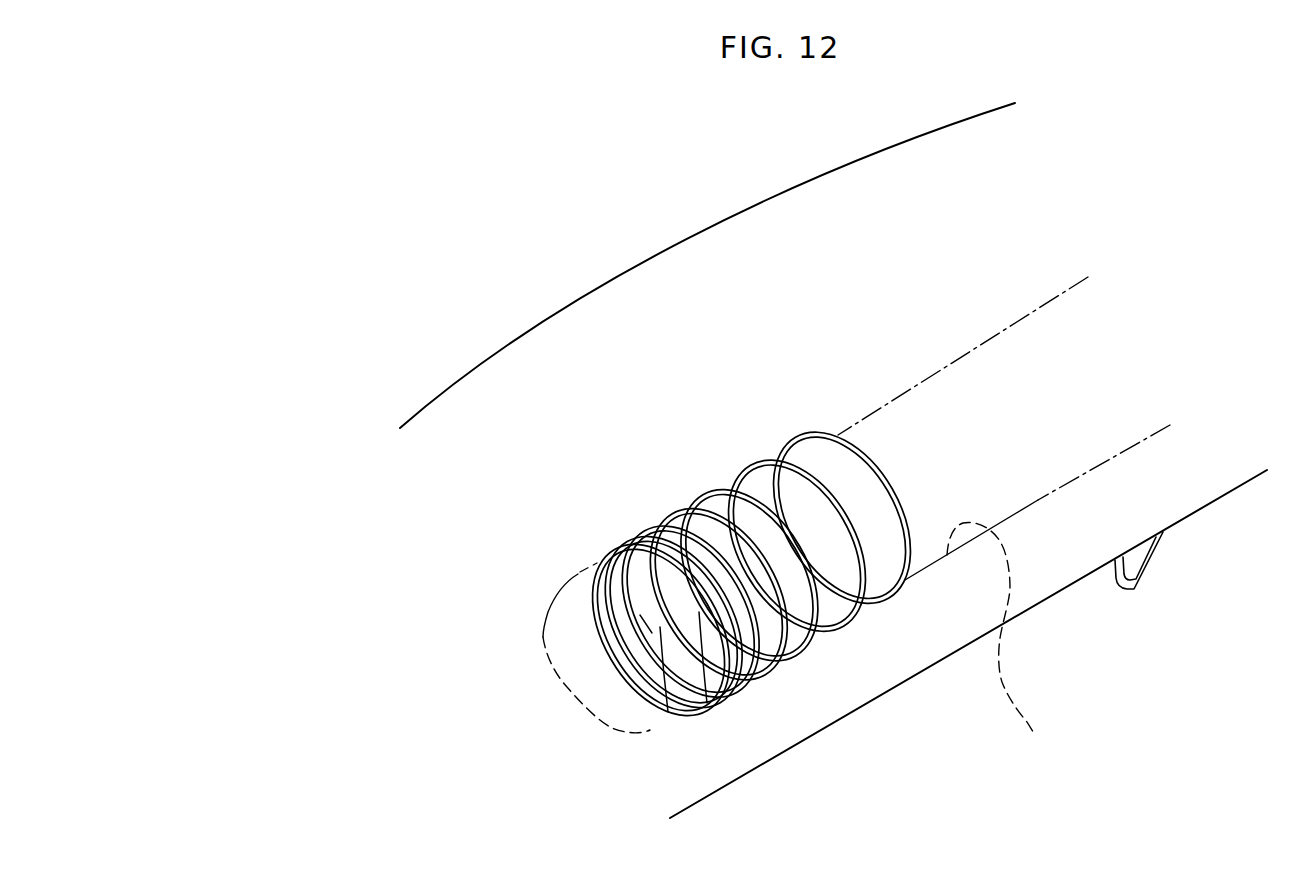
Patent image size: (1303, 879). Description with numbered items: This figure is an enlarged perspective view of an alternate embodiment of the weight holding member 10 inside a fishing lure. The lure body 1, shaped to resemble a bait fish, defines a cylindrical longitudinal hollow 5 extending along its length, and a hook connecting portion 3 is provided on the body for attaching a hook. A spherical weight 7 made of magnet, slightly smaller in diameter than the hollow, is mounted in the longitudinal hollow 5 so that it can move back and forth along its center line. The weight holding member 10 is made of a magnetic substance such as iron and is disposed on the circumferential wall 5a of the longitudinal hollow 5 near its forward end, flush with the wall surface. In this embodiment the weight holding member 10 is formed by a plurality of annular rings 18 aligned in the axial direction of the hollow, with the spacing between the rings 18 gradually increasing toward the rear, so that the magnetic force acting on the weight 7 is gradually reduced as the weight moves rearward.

The lure body 1 is at (503, 292).
The hook connecting portion 3 is at (1150, 574).
The longitudinal hollow 5 is at (1037, 505).
The circumferential wall 5a is at (1001, 645).
The weight 7 is at (707, 703).
The weight holding member 10 is at (838, 292).
The annular ring 18 is at (593, 567).